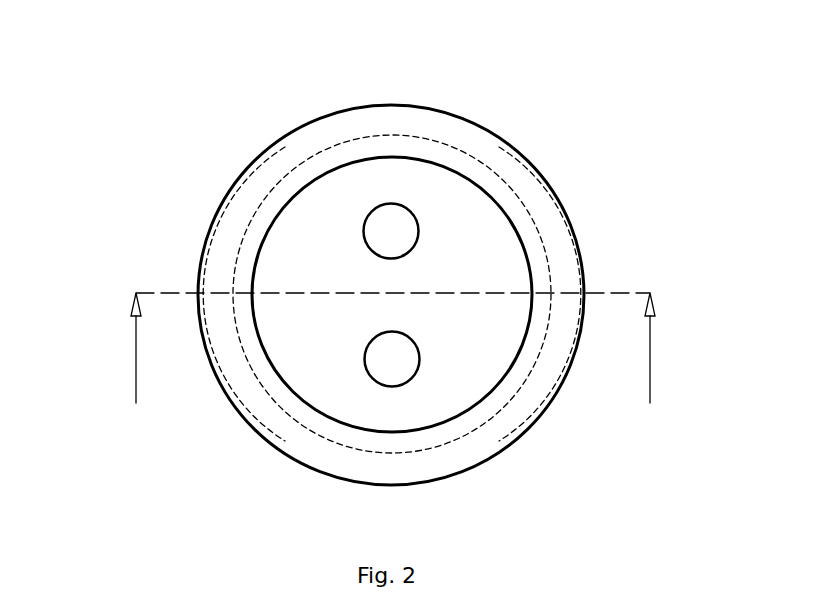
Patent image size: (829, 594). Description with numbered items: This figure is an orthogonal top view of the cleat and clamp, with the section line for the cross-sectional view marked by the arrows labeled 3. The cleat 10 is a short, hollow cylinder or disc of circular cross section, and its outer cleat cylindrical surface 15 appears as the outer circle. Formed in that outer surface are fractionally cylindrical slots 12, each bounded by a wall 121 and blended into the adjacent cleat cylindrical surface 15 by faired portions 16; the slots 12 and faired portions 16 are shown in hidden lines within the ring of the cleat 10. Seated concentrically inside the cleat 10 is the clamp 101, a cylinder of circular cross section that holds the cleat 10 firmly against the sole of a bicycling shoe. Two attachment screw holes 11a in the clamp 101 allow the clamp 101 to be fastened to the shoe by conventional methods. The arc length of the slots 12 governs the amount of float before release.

The cleat 10 is at (388, 123).
The cleat cylindrical surface 15 is at (342, 107).
The fractionally cylindrical slot 12 is at (568, 247).
The faired portion 16 is at (265, 157).
The wall 121 is at (220, 265).
The attachment screw hole 11a is at (392, 220).
The clamp 101 is at (470, 259).
The section line 3- 3 is at (393, 364).